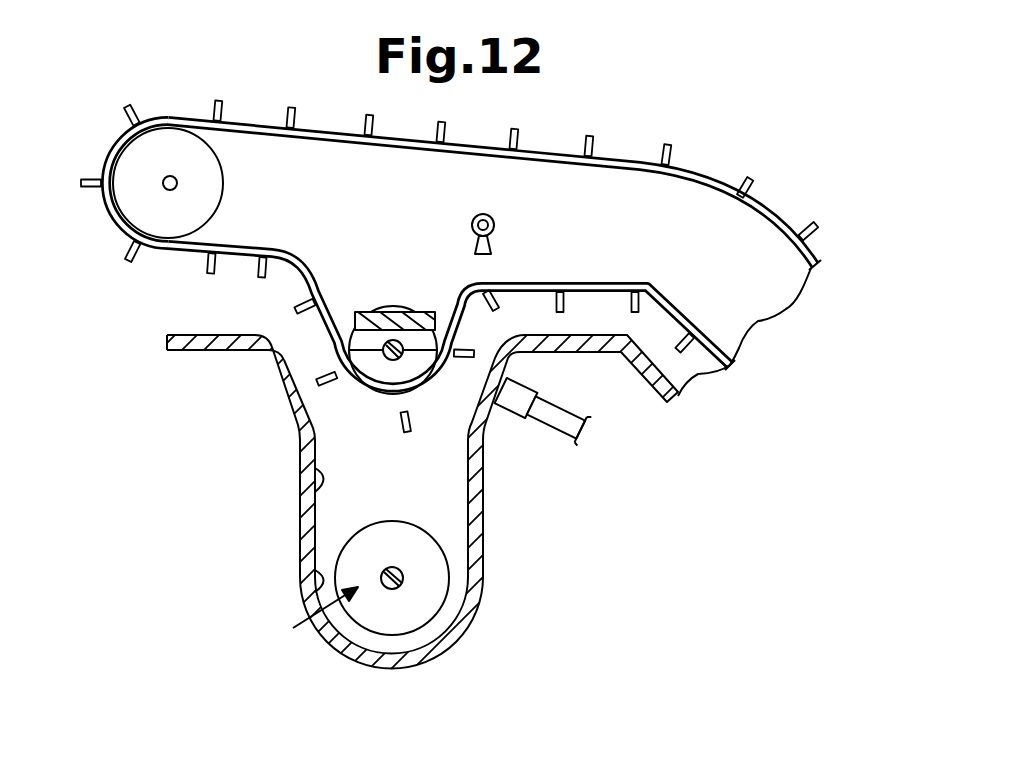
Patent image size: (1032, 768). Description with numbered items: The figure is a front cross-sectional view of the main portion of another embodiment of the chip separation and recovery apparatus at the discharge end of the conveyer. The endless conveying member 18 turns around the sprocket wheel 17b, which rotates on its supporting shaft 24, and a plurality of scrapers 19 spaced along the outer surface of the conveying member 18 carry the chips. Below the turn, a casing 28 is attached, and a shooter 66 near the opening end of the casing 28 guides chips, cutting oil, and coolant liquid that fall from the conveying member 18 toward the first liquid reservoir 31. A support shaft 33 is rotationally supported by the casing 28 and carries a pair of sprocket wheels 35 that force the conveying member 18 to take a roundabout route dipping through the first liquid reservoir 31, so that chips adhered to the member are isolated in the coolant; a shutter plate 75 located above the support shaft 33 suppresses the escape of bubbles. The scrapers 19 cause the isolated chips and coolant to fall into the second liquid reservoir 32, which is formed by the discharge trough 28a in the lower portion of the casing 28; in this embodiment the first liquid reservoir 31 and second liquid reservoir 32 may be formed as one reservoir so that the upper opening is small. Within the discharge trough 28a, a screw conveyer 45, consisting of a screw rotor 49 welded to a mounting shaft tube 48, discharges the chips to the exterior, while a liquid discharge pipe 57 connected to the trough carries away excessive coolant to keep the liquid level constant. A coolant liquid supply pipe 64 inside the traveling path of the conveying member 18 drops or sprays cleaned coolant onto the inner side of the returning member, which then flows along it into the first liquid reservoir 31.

The sprocket wheel 17b is at (128, 205).
The conveying member 18 is at (704, 170).
The scrapers 19 is at (600, 138).
The supporting shaft 24 is at (177, 185).
The casing 28 is at (305, 501).
The discharge trough 28a is at (440, 649).
The first liquid reservoir 31 is at (300, 479).
The second liquid reservoir 32 is at (315, 580).
The support shaft 33 is at (402, 358).
The sprocket wheels 35 is at (381, 393).
The screw conveyer 45 is at (305, 619).
The mounting shaft tube 48 is at (390, 567).
The screw rotor 49 is at (428, 534).
The liquid discharge pipe 57 is at (560, 421).
The coolant liquid supply pipe 64 is at (495, 222).
The shooter 66 is at (205, 352).
The shutter plate 75 is at (400, 312).